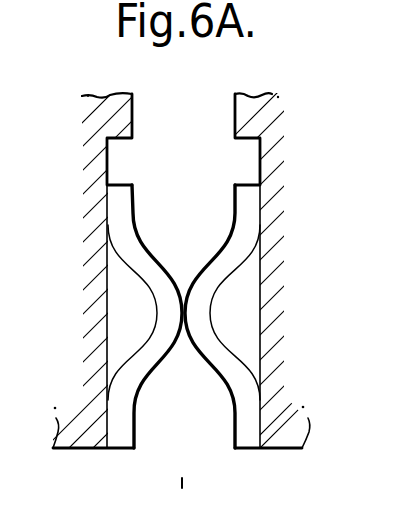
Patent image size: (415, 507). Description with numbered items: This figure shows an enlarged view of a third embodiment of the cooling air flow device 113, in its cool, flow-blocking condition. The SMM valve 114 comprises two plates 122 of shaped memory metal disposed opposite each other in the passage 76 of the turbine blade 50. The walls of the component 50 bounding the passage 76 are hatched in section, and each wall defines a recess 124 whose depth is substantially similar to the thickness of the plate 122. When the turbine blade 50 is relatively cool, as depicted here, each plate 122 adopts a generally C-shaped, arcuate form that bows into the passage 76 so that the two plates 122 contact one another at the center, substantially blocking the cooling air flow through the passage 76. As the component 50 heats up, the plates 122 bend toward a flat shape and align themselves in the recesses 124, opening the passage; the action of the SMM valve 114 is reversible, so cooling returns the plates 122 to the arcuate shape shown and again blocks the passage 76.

The turbine blade 50 is at (255, 112).
The passage 76 is at (164, 108).
The cooling air flow device 113 is at (183, 482).
The SMM valve 114 is at (232, 323).
The plate 122 is at (133, 248).
The recess 124 is at (123, 157).